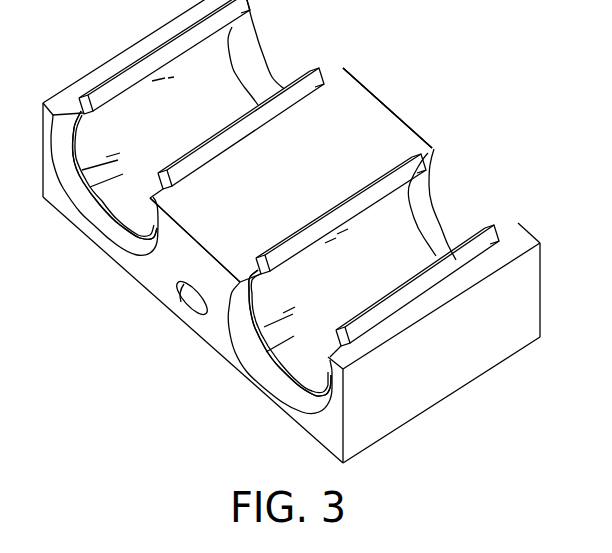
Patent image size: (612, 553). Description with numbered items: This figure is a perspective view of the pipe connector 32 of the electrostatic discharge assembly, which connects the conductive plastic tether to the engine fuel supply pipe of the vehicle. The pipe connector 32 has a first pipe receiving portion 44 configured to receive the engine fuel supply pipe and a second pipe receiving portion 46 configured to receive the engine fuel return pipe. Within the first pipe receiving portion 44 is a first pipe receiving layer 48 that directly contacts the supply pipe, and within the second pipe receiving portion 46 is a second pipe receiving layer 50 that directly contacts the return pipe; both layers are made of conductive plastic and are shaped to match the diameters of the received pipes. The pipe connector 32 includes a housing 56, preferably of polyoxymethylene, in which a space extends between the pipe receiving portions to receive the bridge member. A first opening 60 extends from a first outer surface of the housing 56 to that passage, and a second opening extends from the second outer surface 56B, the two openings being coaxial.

The pipe connector 32 is at (103, 58).
The first pipe receiving portion 44 is at (265, 44).
The second pipe receiving portion 46 is at (441, 210).
The first pipe receiving layer 48 is at (125, 175).
The second pipe receiving layer 50 is at (289, 333).
The housing 56 is at (418, 131).
The second outer surface 56B is at (369, 88).
The first opening 60 is at (182, 301).